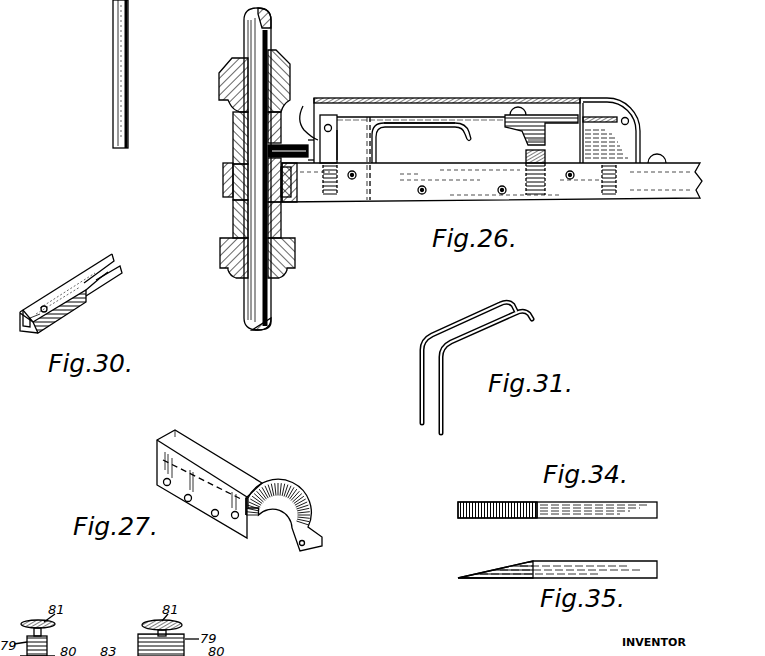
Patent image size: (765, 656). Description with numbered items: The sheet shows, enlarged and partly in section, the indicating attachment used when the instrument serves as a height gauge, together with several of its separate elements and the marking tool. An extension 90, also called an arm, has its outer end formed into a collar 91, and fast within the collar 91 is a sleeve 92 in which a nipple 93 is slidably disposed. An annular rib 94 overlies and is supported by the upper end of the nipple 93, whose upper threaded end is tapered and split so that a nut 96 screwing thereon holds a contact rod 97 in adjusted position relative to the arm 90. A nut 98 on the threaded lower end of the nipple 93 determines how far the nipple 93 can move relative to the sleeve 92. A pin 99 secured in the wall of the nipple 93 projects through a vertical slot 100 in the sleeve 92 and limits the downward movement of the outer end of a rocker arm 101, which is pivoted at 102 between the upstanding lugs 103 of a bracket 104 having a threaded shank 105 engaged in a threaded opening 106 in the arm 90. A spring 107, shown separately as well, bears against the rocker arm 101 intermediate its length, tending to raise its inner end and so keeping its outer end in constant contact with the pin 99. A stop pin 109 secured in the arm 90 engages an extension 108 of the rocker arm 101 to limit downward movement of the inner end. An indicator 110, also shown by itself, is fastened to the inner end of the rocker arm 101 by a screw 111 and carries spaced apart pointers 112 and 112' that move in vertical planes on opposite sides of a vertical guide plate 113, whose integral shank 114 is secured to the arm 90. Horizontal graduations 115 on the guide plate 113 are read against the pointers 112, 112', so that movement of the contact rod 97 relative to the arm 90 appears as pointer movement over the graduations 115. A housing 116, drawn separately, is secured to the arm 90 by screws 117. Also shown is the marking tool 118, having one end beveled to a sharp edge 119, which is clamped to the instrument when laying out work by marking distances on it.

In FIG. 26, the extension 90 is at (670, 196).
In FIG. 26, the collar 91 is at (224, 184).
In FIG. 26, the sleeve 92 is at (236, 152).
In FIG. 26, the nipple 93 is at (234, 210).
In FIG. 26, the annular rib 94 is at (234, 117).
In FIG. 26, the nut 96 is at (292, 84).
In FIG. 26, the contact rod 97 is at (113, 62).
In FIG. 26, the nut 98 is at (291, 262).
In FIG. 26, the pin 99 is at (299, 182).
In FIG. 26, the vertical slot 100 is at (297, 138).
In FIG. 26, the rocker arm 101 is at (440, 128).
In FIG. 26, the pivot 102 is at (331, 125).
In FIG. 26, the upstanding lug 103 is at (327, 118).
In FIG. 26, the bracket 104 is at (339, 149).
In FIG. 26, the threaded shank 105 is at (328, 199).
In FIG. 26, the threaded opening 106 is at (347, 198).
In FIG. 26, the spring 107 is at (372, 155).
In FIG. 31, the spring 107 is at (444, 338).
In FIG. 26, the extension 108 is at (546, 141).
In FIG. 26, the stop pin 109 is at (525, 157).
In FIG. 26, the indicator 110 is at (540, 116).
In FIG. 30, the indicator 110 is at (50, 303).
In FIG. 26, the screw 111 is at (516, 108).
In FIG. 30, the pointer 112 is at (96, 266).
In FIG. 26, the pointer 112' is at (598, 119).
In FIG. 30, the pointer 112' is at (112, 282).
In FIG. 26, the vertical guide plate 113 is at (621, 142).
In FIG. 26, the integral shank 114 is at (618, 182).
In FIG. 26, the horizontal graduations 115 is at (628, 117).
In FIG. 26, the housing 116 is at (452, 98).
In FIG. 27, the housing 116 is at (215, 462).
In FIG. 26, the screws 117 is at (662, 156).
In FIG. 34, the marking tool 118 is at (636, 518).
In FIG. 35, the marking tool 118 is at (616, 561).
In FIG. 34, the sharp edge 119 is at (457, 510).
In FIG. 35, the sharp edge 119 is at (458, 578).